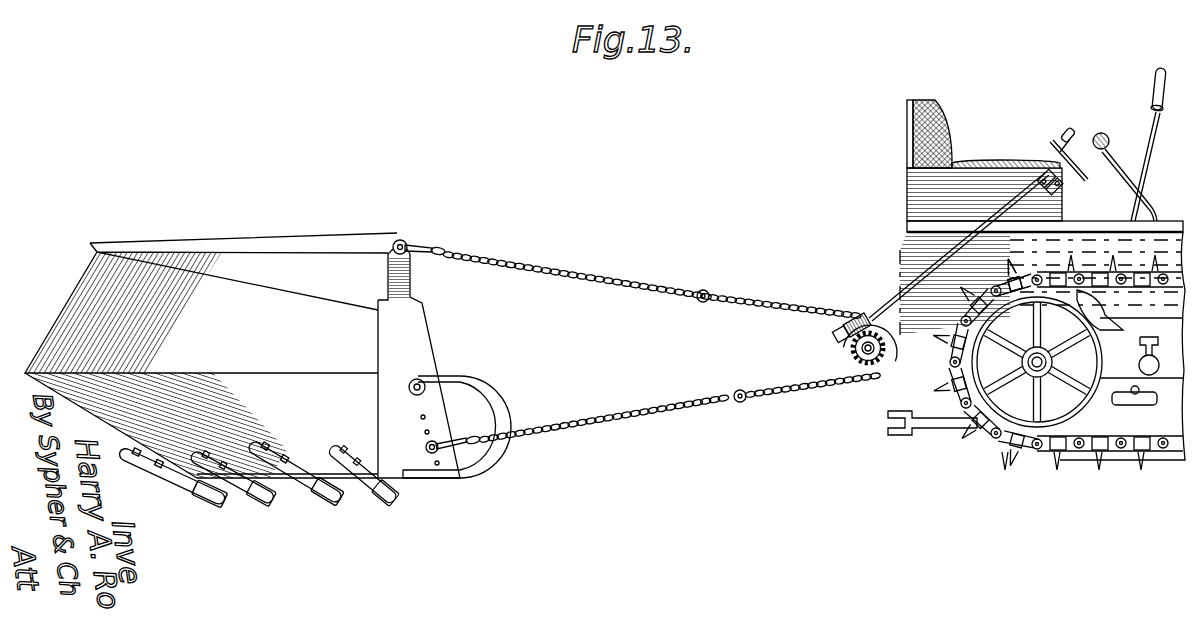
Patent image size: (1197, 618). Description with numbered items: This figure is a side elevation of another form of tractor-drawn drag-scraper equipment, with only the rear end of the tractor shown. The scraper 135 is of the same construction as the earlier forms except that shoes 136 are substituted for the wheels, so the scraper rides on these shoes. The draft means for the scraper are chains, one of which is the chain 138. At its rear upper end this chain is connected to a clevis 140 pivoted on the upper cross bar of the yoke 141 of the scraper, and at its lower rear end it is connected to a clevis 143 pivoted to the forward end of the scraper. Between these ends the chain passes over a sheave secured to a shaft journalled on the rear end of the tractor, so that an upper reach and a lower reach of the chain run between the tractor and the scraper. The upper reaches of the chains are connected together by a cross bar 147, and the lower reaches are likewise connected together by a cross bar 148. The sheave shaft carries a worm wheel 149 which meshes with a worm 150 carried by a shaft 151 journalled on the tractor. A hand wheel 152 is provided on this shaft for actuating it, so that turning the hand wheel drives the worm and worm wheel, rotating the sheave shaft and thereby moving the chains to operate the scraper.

The scraper 135 is at (283, 305).
The shoes 136 is at (492, 403).
The chain 138 is at (593, 276).
The clevis 140 is at (430, 231).
The yoke 141 is at (421, 359).
The clevis 143 is at (452, 434).
The cross bar 147 is at (700, 303).
The cross bar 148 is at (743, 388).
The worm wheel 149 is at (868, 362).
The worm 150 is at (853, 318).
The shaft 151 is at (1036, 270).
The hand wheel 152 is at (1049, 144).